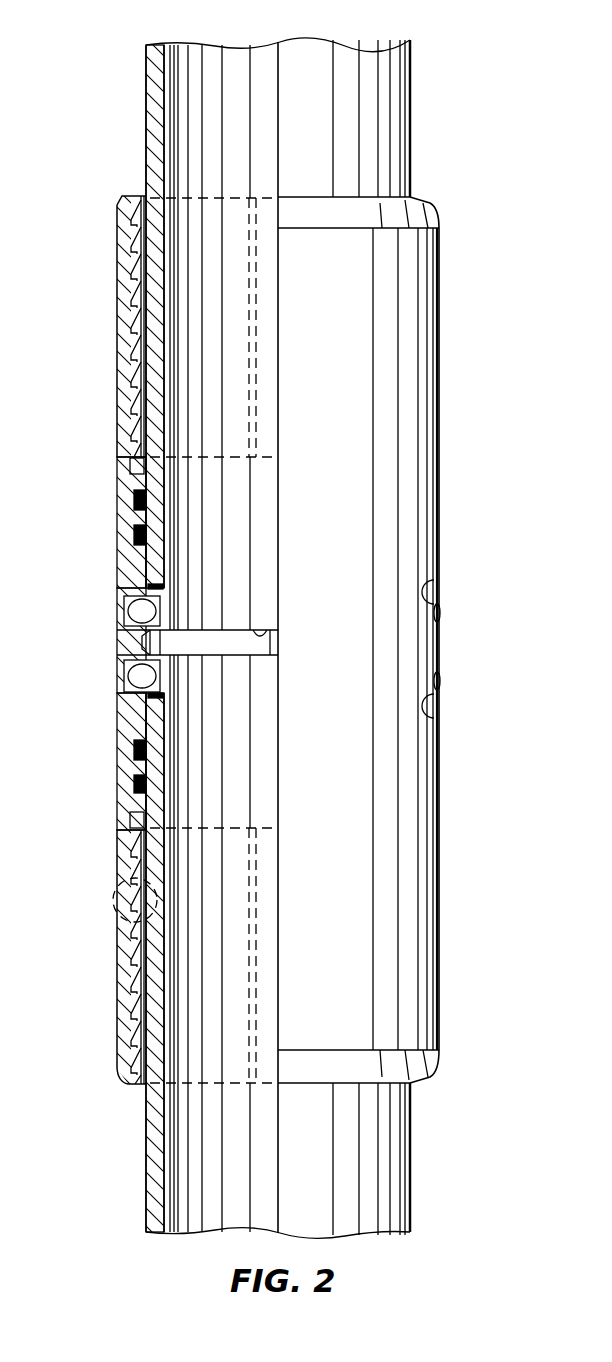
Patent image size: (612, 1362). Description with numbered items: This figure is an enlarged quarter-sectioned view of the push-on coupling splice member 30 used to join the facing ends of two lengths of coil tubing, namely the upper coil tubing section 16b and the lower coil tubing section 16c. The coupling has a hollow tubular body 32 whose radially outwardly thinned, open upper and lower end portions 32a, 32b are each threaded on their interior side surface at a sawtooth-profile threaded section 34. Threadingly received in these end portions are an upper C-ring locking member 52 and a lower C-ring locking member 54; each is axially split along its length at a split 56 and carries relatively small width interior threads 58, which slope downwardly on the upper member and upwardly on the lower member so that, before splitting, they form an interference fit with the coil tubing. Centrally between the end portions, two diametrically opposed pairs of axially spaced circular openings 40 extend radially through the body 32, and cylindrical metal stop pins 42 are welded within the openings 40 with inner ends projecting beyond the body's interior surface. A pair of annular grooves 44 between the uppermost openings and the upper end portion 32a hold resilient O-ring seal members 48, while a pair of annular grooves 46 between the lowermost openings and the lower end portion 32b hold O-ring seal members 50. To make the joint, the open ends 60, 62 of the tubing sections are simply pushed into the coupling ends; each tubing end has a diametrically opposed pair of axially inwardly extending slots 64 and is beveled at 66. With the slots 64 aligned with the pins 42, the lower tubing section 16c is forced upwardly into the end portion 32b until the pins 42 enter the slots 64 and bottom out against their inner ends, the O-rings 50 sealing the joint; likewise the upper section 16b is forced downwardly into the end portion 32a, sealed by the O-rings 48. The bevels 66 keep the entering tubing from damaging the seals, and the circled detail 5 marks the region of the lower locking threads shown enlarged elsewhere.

The detail circle 5 is at (113, 895).
The upper coil tubing section 16b is at (146, 120).
The lower coil tubing section 16c is at (146, 1140).
The push-on coupling splice member 30 is at (452, 516).
The hollow tubular body 32 is at (118, 576).
The upper end portion 32a is at (118, 310).
The lower end portion 32b is at (118, 1016).
The threaded section 34 is at (148, 272).
The circular openings 40 is at (152, 602).
The stop pins 42 is at (156, 614).
The annular grooves 44 is at (135, 535).
The annular grooves 46 is at (135, 783).
The O-ring seal members 48 is at (145, 535).
The O-ring seal members 50 is at (145, 785).
The upper C-ring locking member 52 is at (195, 180).
The lower C-ring locking member 54 is at (147, 932).
The axial split 56 is at (258, 270).
The interior threads 58 is at (142, 330).
The open end 60 is at (275, 630).
The open end 62 is at (280, 655).
The slots 64 is at (120, 650).
The bevel 66 is at (156, 586).